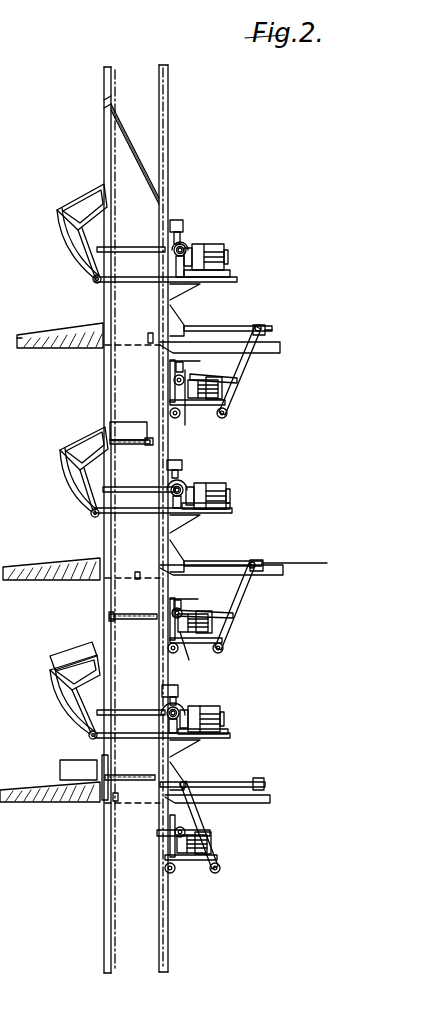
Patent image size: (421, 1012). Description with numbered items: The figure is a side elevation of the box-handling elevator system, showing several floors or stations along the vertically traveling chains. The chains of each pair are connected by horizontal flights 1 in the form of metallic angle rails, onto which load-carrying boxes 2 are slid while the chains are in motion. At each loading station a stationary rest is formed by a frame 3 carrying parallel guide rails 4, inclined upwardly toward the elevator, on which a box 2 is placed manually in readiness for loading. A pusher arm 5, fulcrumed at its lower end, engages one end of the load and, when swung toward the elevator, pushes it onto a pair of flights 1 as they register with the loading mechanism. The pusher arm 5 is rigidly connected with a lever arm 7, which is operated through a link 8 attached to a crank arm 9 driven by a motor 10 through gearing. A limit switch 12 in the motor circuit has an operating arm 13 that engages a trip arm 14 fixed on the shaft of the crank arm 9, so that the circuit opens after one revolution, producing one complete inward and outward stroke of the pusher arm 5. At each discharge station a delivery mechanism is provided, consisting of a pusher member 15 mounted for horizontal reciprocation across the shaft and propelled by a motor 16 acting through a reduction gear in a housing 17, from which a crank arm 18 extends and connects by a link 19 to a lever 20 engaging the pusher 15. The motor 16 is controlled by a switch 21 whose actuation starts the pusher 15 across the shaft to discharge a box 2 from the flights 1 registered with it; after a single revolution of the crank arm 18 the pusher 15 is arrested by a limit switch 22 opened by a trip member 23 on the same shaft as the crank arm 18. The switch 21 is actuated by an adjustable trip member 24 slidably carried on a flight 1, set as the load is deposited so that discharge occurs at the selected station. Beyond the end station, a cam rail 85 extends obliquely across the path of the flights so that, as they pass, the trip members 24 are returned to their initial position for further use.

The flight 1 is at (135, 444).
The load-carrying box 2 is at (130, 422).
The frame 3 is at (80, 258).
The guide rails 4 is at (88, 198).
The pusher arm 5 is at (68, 250).
The lever arm 7 is at (88, 280).
The link 8 is at (120, 249).
The crank arm 9 is at (173, 250).
The motor 10 is at (212, 250).
The limit switch 12 is at (176, 220).
The operating arm 13 is at (184, 240).
The trip arm 14 is at (184, 248).
The pusher member 15 is at (178, 318).
The motor 16 is at (205, 379).
The reduction gear housing 17 is at (171, 388).
The crank arm 18 is at (195, 521).
The link 19 is at (228, 383).
The lever 20 is at (249, 366).
The switch 21 is at (148, 338).
The limit switch 22 is at (182, 375).
The trip member 23 is at (176, 366).
The trip member 24 is at (154, 444).
The cam rail 85 is at (137, 148).